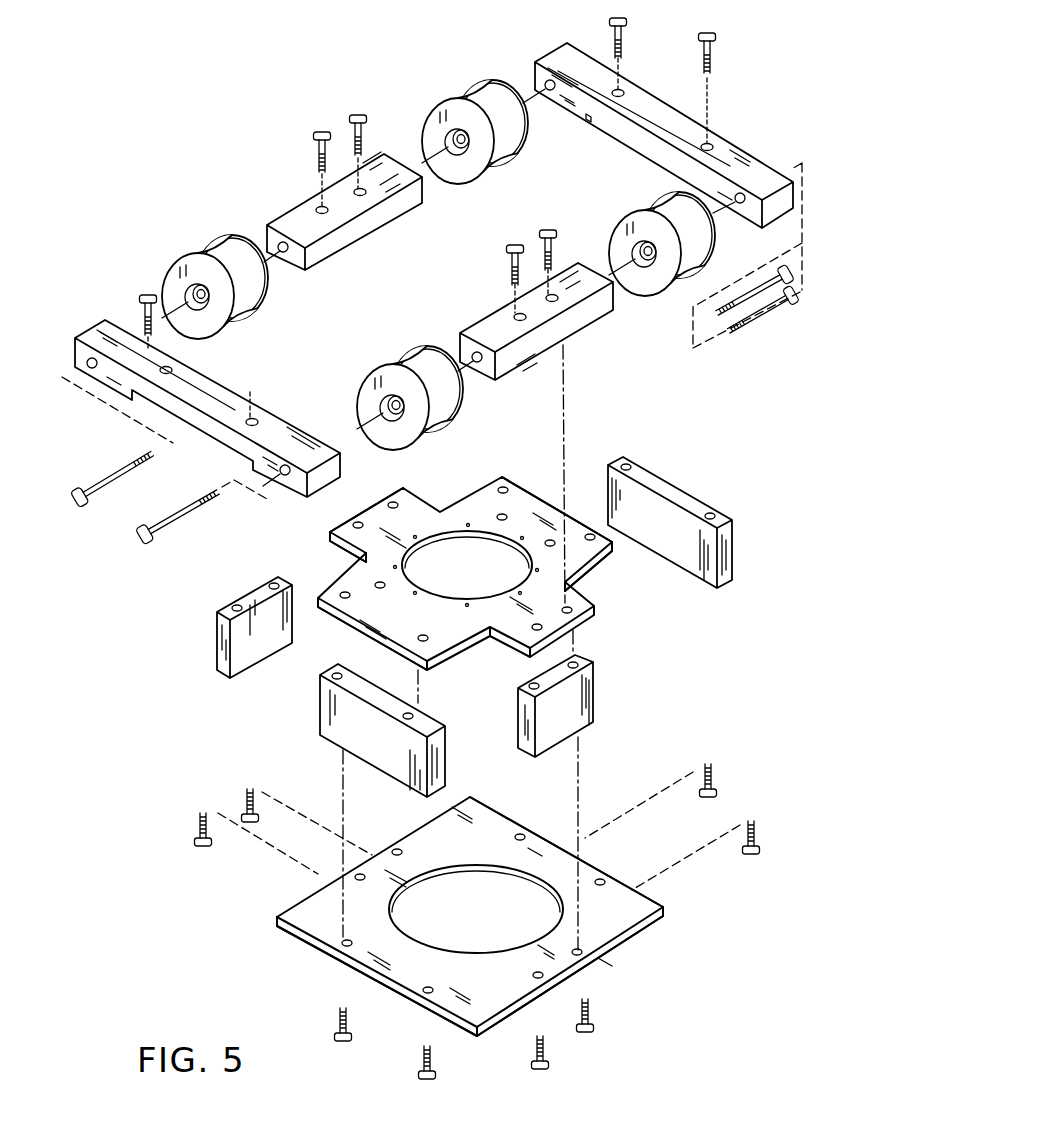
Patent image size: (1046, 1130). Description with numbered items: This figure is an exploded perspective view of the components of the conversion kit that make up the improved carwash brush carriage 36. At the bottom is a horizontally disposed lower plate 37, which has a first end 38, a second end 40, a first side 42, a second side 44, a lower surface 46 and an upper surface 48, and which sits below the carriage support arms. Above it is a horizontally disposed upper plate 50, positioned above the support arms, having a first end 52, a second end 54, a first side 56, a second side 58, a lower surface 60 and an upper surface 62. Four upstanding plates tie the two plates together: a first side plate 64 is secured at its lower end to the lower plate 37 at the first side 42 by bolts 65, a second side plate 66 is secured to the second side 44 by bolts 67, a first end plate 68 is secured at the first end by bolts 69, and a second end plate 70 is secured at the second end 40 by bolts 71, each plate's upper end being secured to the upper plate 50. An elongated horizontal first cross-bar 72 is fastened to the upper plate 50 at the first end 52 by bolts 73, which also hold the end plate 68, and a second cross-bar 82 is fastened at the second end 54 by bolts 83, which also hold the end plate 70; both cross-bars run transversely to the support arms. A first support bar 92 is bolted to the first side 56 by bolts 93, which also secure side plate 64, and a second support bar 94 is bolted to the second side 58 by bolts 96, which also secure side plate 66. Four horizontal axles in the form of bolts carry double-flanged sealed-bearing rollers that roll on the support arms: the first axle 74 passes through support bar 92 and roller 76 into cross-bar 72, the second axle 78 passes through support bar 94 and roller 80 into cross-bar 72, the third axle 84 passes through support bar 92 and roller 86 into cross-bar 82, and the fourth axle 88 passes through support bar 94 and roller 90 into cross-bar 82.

The improved brush carriage 36 is at (401, 88).
The lower plate 37 is at (651, 904).
The first end 38 is at (618, 948).
The second end 40 is at (305, 888).
The first side 42 is at (367, 972).
The second side 44 is at (605, 862).
The lower surface 46 is at (302, 952).
The upper surface 48 is at (472, 990).
The upper plate 50 is at (517, 462).
The first end 52 is at (582, 618).
The second end 54 is at (330, 520).
The first side 56 is at (372, 637).
The second side 58 is at (573, 525).
The lower surface 60 is at (472, 648).
The upper surface 62 is at (440, 636).
The first side plate 64 is at (320, 756).
The bolts 65 is at (420, 1073).
The second side plate 66 is at (700, 472).
The bolts 67 is at (753, 820).
The first end plate 68 is at (612, 699).
The bolts 69 is at (550, 1065).
The second end plate 70 is at (194, 657).
The bolts 71 is at (247, 790).
The first cross-bar 72 is at (476, 294).
The bolts 73 is at (548, 228).
The first axle 74 is at (183, 510).
The double-flanged roller 76 is at (390, 363).
The second axle 78 is at (772, 308).
The double-flanged roller 80 is at (650, 195).
The second cross-bar 82 is at (292, 203).
The bolts 83 is at (358, 112).
The third axle 84 is at (103, 477).
The double-flanged roller 86 is at (203, 245).
The fourth axle 88 is at (810, 277).
The double-flanged roller 90 is at (486, 90).
The first support bar 92 is at (296, 400).
The bolts 93 is at (135, 302).
The second support bar 94 is at (752, 132).
The bolts 96 is at (712, 45).